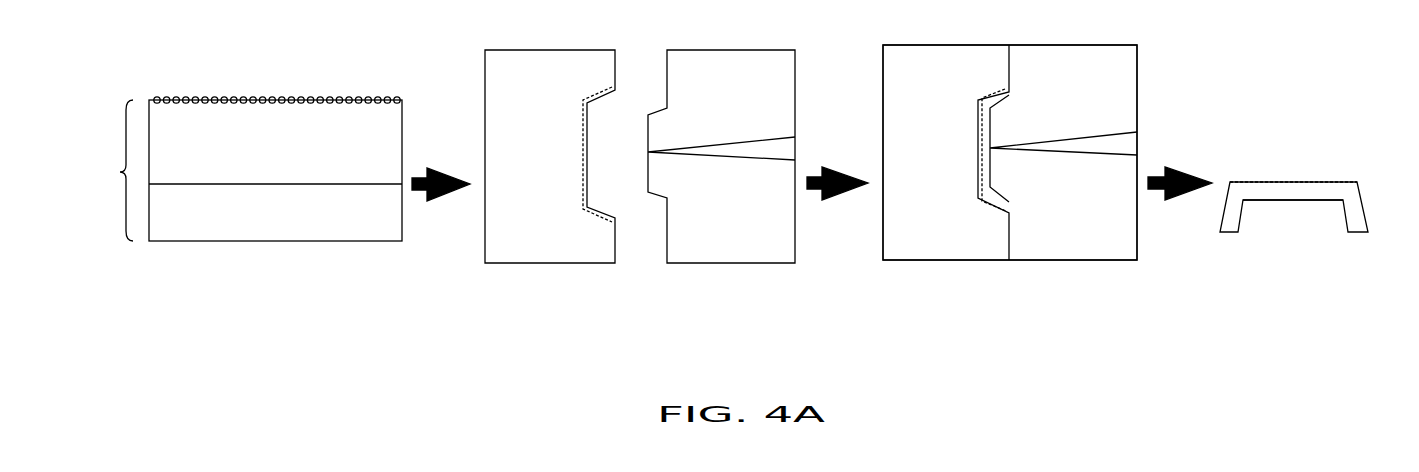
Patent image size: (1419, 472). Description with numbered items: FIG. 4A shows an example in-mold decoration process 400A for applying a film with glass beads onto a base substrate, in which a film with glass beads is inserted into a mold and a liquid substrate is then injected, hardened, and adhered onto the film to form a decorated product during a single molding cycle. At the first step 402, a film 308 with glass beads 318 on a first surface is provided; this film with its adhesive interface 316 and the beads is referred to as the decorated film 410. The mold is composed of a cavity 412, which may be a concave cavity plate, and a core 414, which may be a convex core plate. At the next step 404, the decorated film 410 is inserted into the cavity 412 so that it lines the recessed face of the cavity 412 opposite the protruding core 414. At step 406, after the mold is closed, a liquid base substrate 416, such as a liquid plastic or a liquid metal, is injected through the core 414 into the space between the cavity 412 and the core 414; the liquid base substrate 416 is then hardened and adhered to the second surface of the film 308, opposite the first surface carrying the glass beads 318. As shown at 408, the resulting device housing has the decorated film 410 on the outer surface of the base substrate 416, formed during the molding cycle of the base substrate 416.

The in-mold decoration process 400A is at (934, 343).
The providing step 402 is at (275, 185).
The inserting step 404 is at (811, 190).
The injecting step 406 is at (994, 284).
The formed device housing step 408 is at (1295, 279).
The decorated film 410 is at (1282, 136).
The cavity 412 is at (517, 255).
The core 414 is at (1132, 249).
The liquid base substrate 416 is at (1143, 148).
The film 308 is at (327, 225).
The adhesive interface 316 is at (368, 169).
The glass beads 318 is at (375, 97).